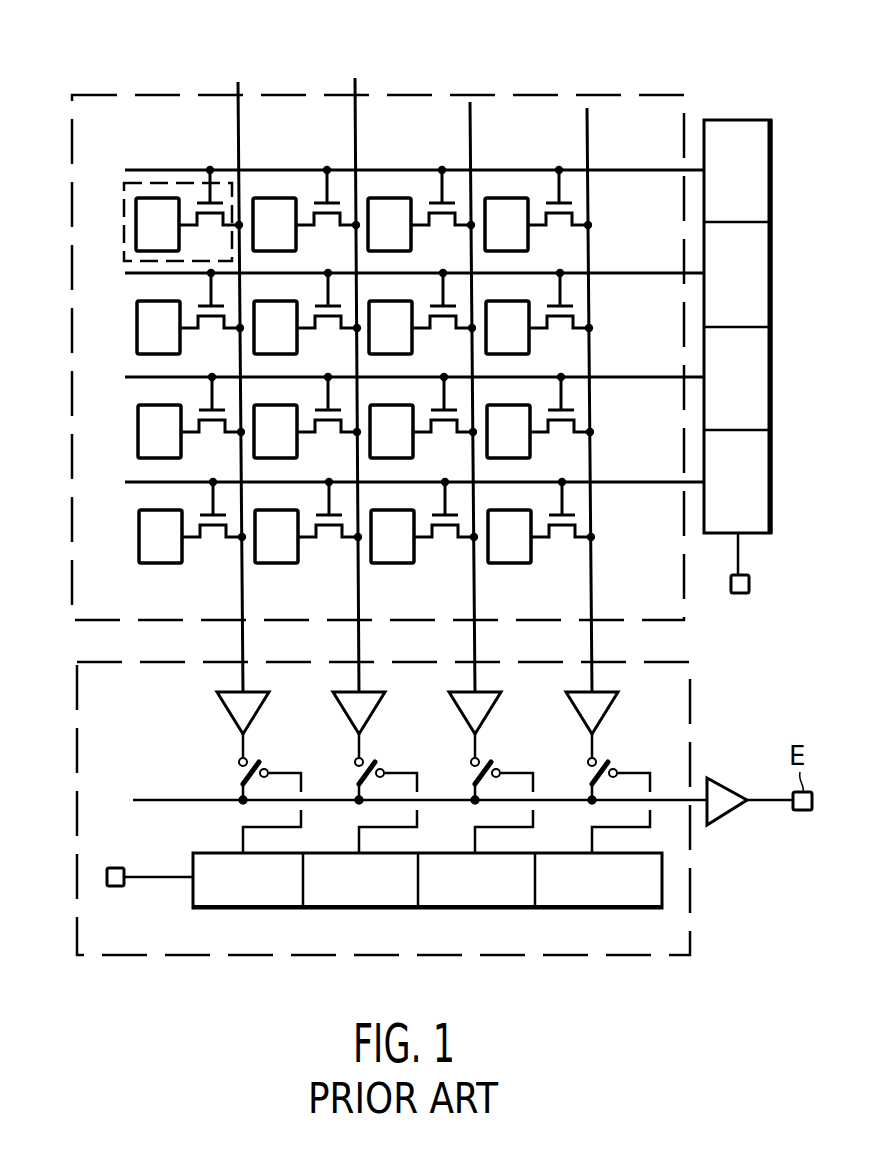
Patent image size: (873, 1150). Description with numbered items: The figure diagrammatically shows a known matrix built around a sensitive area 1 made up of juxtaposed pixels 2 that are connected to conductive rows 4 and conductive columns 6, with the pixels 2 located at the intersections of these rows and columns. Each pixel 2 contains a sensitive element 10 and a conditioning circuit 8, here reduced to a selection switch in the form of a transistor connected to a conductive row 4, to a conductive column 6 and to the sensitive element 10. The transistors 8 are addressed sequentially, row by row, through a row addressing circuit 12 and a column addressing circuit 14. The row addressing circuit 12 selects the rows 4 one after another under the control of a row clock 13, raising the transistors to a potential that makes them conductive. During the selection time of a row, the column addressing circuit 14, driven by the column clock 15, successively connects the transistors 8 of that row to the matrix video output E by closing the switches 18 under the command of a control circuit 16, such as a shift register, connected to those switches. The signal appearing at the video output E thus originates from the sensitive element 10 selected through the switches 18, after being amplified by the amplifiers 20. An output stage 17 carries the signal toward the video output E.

The sensitive area 1 is at (104, 95).
The pixel 2 is at (124, 190).
The conductive row 4 is at (133, 370).
The conductive column 6 is at (355, 95).
The conditioning circuit 8 is at (341, 198).
The sensitive element 10 is at (272, 198).
The row addressing circuit 12 is at (745, 121).
The row clock 13 is at (750, 583).
The column addressing circuit 14 is at (690, 705).
The column clock 15 is at (123, 887).
The control circuit 16 is at (662, 887).
The output amplifier 17 is at (726, 788).
The switch 18 is at (222, 773).
The amplifier 20 is at (232, 714).